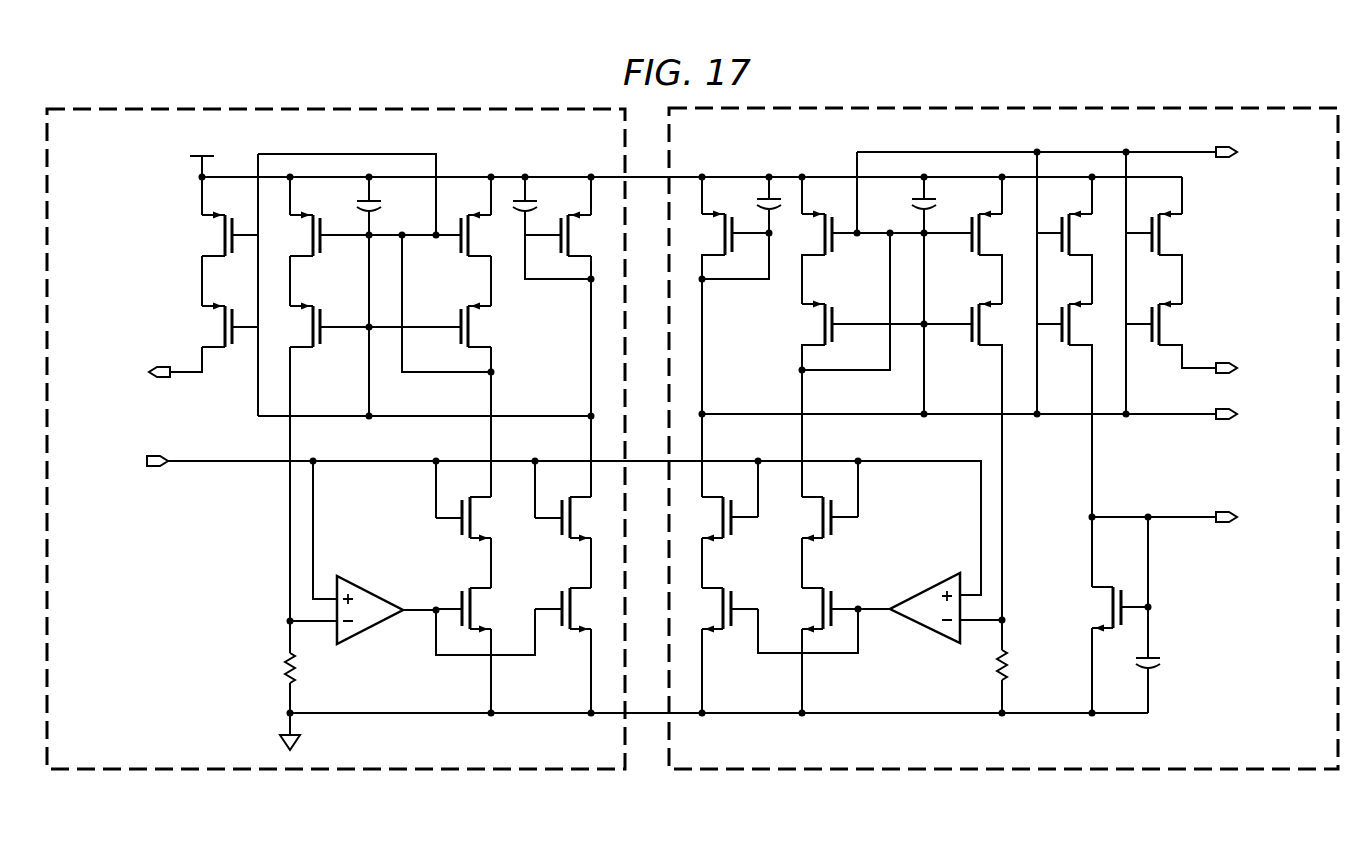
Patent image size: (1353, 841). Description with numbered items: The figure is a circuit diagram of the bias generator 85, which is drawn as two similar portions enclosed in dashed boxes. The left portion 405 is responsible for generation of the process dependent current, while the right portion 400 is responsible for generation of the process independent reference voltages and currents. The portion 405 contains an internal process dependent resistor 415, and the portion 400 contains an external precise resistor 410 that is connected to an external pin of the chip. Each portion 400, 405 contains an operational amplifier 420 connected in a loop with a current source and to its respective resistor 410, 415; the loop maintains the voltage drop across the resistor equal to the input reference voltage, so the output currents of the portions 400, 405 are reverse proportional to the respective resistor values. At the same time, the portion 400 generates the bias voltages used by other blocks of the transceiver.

The bias generator 85 is at (277, 58).
The portion 405 is at (322, 782).
The portion 400 is at (1134, 782).
The internal process dependent resistor 415 is at (284, 666).
The external precise resistor 410 is at (1008, 667).
The operational amplifier 420 is at (371, 628).